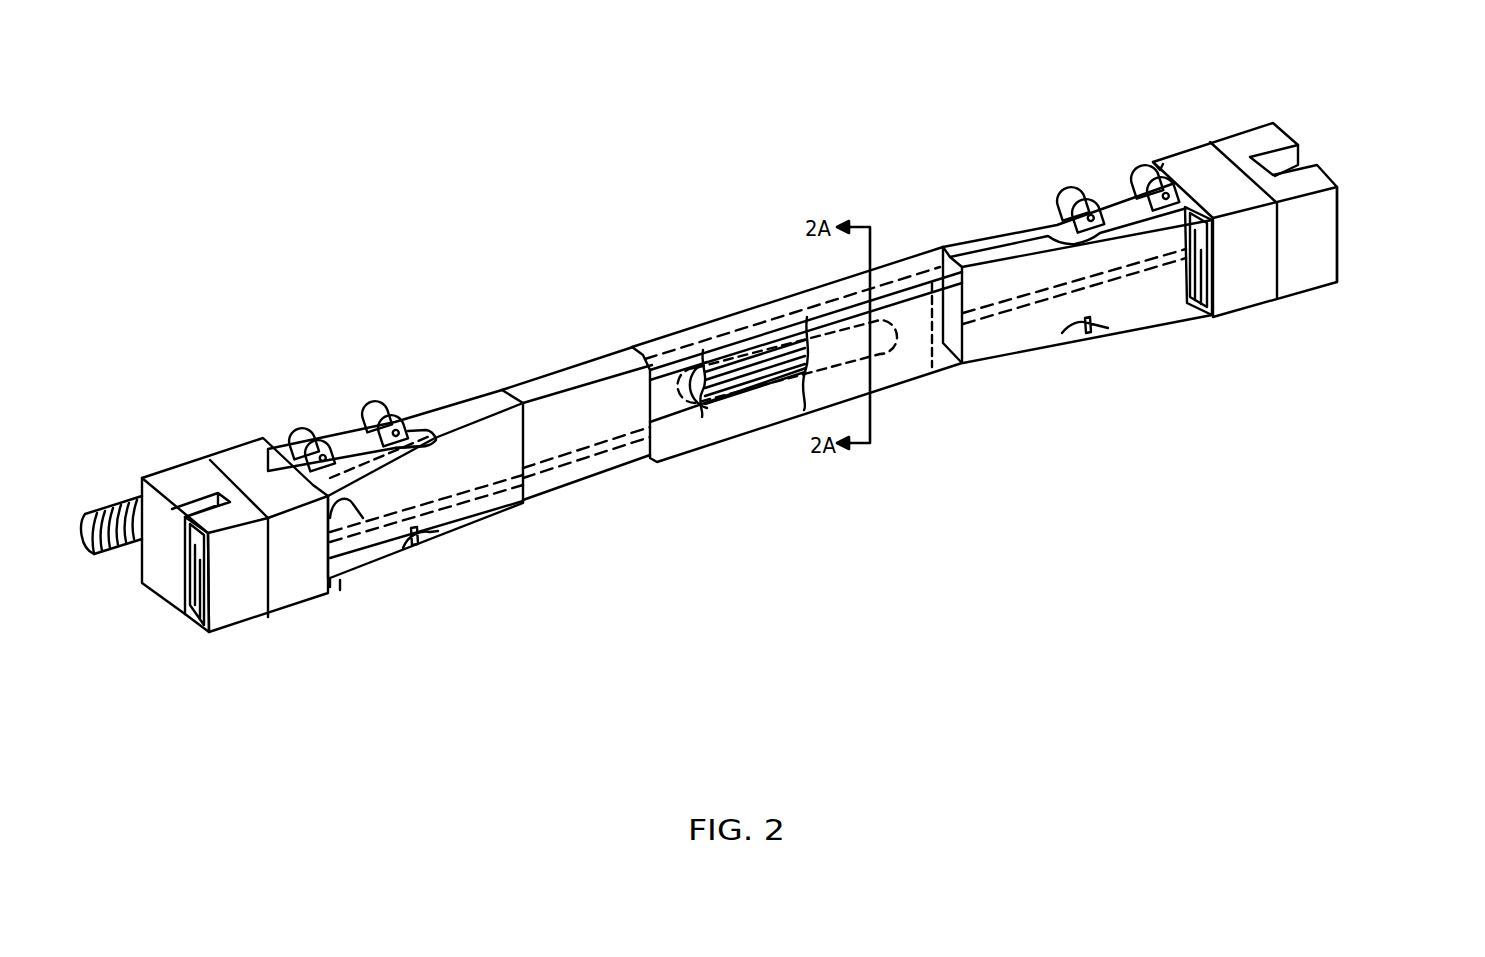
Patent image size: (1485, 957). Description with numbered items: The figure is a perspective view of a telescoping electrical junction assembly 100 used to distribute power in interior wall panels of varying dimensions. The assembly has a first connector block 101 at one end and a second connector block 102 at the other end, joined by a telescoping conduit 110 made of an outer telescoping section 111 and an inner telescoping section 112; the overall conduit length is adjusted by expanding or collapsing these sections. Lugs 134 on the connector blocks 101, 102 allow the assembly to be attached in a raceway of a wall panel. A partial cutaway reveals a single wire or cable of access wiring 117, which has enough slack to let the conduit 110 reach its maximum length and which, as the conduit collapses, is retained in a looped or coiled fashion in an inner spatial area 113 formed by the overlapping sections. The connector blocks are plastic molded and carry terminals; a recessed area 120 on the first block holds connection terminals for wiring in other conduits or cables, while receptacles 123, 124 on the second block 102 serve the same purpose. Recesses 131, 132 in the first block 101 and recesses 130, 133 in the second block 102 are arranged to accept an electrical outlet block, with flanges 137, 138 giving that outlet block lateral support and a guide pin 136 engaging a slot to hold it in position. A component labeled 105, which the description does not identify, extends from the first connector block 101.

The electrical junction assembly 100 is at (757, 307).
The first connector block 101 is at (232, 455).
The second connector block 102 is at (1183, 145).
The threaded rod 105 is at (108, 500).
The telescoping conduit 110 is at (655, 335).
The outer telescoping section 111 is at (918, 253).
The inner telescoping section 112 is at (538, 382).
The inner spatial area 113 is at (742, 375).
The access wiring 117 is at (688, 405).
The recessed area 120 is at (197, 602).
The receptacle 123 is at (1283, 130).
The receptacle 124 is at (1340, 217).
The recess 130 is at (1152, 162).
The recess 131 is at (363, 518).
The recess 132 is at (277, 433).
The recess 133 is at (1197, 272).
The lug 134 is at (373, 407).
The guide pin 136 is at (420, 547).
The flange 137 is at (453, 440).
The flange 138 is at (342, 582).